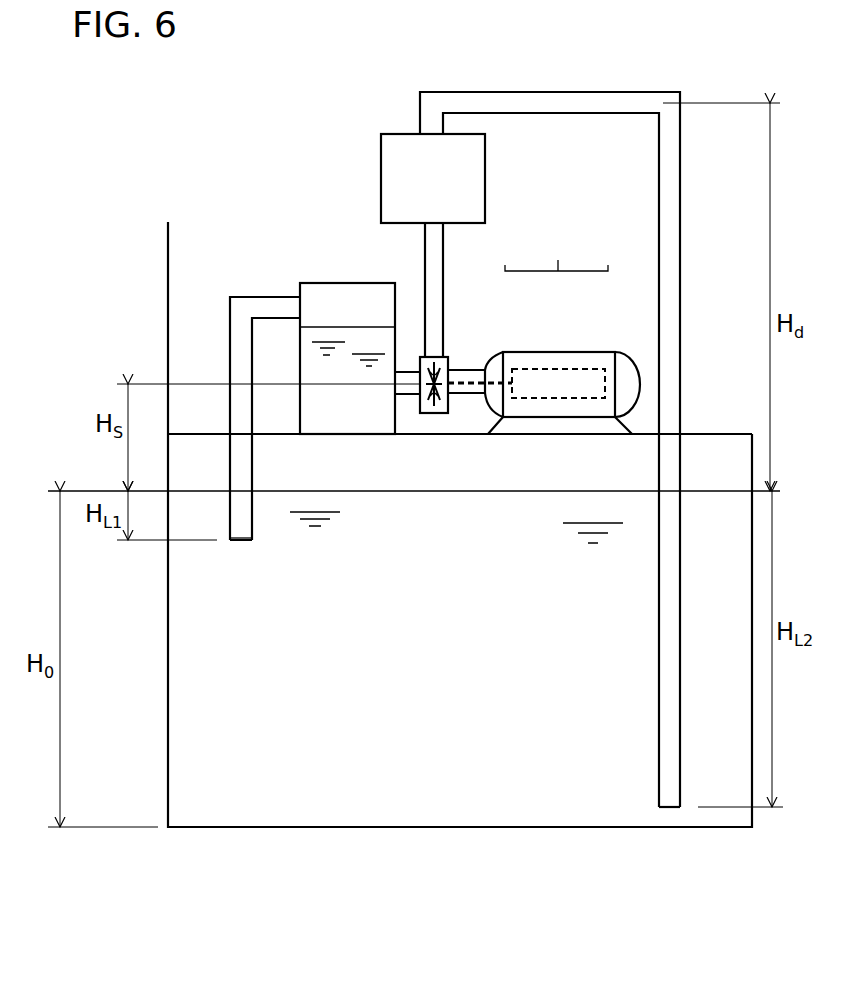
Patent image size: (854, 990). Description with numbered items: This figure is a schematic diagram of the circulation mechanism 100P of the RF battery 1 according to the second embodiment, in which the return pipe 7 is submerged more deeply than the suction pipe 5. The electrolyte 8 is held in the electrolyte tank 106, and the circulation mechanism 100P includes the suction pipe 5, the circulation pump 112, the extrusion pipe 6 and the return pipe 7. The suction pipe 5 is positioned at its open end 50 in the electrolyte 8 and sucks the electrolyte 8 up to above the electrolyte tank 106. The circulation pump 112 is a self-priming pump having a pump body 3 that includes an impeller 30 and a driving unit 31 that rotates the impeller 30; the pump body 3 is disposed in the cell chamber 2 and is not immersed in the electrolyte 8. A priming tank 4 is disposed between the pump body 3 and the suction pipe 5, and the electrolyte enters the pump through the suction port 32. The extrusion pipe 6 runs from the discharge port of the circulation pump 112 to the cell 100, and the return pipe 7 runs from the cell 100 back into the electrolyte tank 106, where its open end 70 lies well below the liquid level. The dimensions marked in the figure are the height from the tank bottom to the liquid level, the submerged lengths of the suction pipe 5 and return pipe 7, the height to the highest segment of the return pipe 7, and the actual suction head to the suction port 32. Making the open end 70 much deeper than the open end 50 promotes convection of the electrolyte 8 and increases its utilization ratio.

The RF battery 1 is at (120, 222).
The cell chamber 2 is at (168, 332).
The pump body 3 is at (556, 251).
The priming tank 4 is at (347, 283).
The suction pipe 5 is at (230, 332).
The extrusion pipe 6 is at (445, 298).
The return pipe 7 is at (680, 225).
The electrolyte 8 is at (200, 705).
The impeller 30 is at (450, 358).
The driving unit 31 is at (575, 362).
The suction port 32 is at (420, 378).
The open end 50 is at (243, 542).
The open end 70 is at (668, 810).
The cell 100 is at (485, 197).
The circulation mechanism 100P is at (327, 233).
The electrolyte tank 106 is at (287, 828).
The circulation pump 112 is at (618, 345).